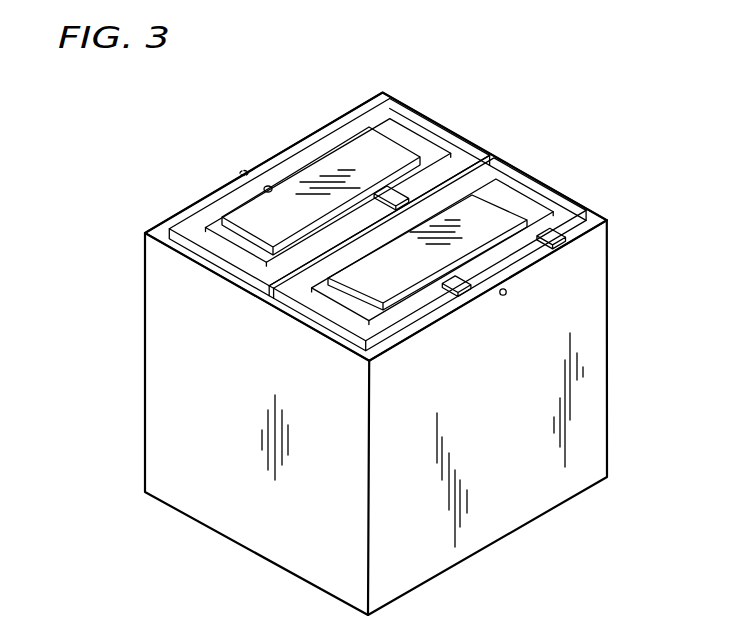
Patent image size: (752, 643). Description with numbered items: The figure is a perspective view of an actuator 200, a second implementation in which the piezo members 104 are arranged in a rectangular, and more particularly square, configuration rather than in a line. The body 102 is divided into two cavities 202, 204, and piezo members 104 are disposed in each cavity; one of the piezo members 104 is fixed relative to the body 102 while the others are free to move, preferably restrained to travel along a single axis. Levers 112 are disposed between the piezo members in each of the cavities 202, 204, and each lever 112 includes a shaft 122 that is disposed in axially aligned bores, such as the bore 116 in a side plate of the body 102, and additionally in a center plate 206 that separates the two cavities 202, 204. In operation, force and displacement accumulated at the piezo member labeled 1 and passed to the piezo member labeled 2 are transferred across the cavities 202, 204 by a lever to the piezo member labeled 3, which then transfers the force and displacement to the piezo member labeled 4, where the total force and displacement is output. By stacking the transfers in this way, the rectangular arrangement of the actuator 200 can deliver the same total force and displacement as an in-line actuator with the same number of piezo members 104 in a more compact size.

The actuator 200 is at (198, 110).
The piezo member label 1 is at (212, 226).
The piezo member label 2 is at (424, 122).
The piezo member label 3 is at (500, 213).
The piezo member label 4 is at (288, 298).
The body 102 is at (368, 94).
The piezo members 104 is at (210, 230).
The levers 112 is at (380, 148).
The bore 116 is at (243, 170).
The shaft 122 is at (266, 186).
The cavity 202 is at (293, 166).
The cavity 204 is at (515, 167).
The center plate 206 is at (463, 165).